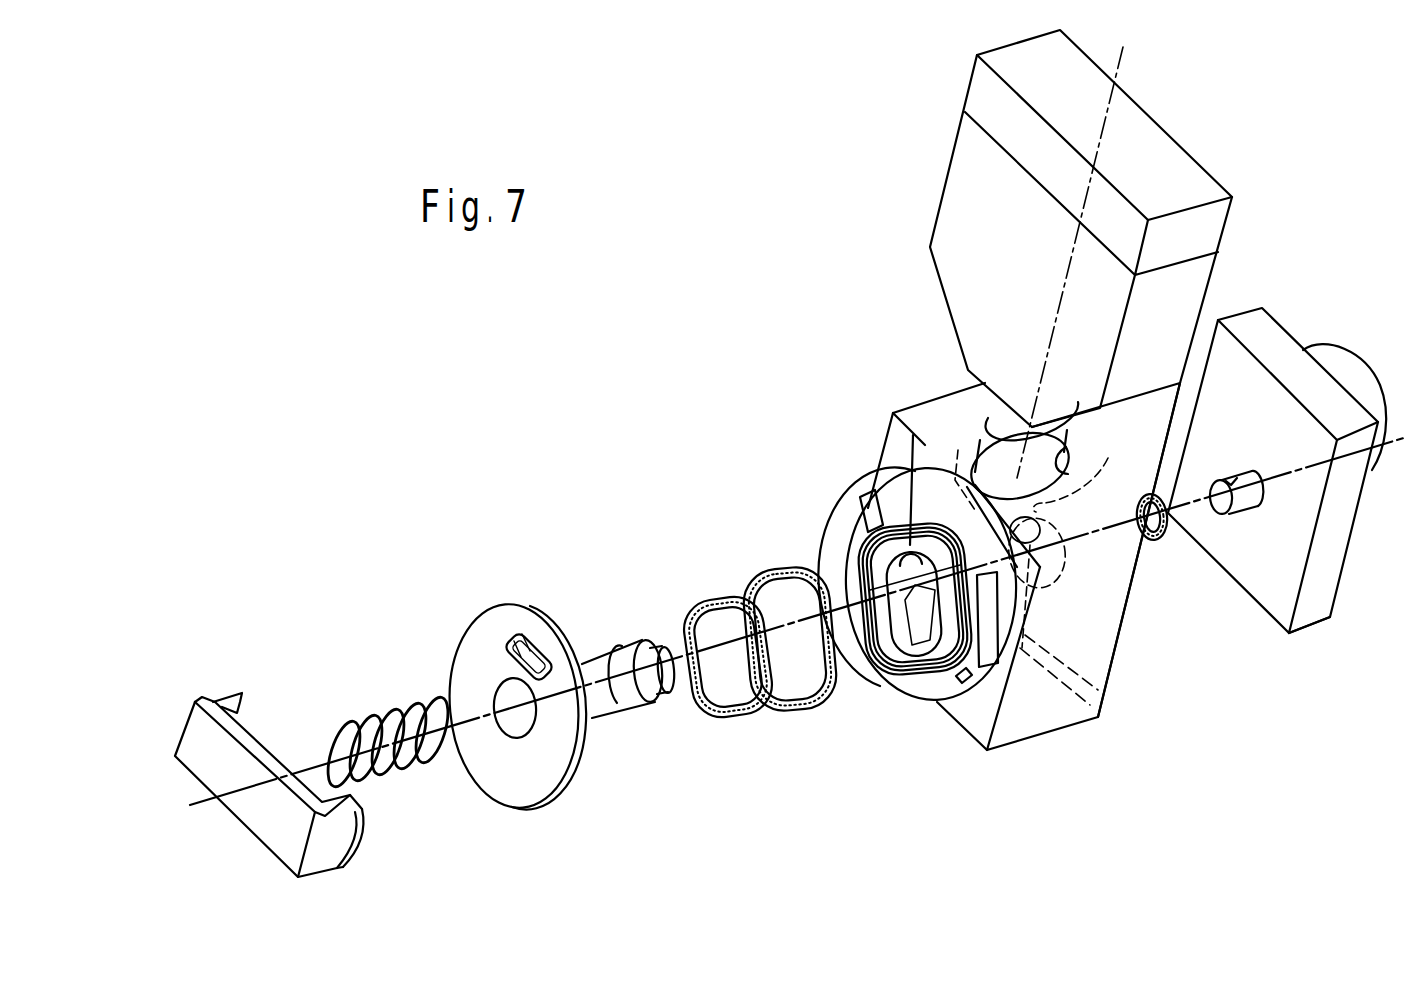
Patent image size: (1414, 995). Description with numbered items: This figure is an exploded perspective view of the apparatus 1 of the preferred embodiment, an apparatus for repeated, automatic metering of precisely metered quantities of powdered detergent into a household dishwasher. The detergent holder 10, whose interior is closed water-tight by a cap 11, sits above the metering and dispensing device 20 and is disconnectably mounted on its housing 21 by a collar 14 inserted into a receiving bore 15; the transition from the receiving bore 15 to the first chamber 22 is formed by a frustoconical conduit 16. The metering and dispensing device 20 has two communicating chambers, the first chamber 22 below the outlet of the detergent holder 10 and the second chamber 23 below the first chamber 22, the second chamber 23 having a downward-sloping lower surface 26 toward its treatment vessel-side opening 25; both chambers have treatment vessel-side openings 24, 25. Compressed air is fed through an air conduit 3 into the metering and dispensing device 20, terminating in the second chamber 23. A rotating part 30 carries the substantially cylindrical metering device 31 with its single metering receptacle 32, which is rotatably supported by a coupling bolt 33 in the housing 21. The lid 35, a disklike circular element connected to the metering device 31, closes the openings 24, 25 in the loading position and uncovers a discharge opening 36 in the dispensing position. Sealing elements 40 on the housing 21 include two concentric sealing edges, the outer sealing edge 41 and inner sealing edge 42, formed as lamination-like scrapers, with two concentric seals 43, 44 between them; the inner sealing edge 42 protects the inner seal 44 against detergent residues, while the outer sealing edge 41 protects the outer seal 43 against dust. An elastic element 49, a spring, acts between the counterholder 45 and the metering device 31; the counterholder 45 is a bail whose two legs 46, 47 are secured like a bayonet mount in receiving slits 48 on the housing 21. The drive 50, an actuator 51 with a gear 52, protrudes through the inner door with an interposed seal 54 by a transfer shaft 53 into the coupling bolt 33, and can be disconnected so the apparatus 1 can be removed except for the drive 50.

The apparatus 1 is at (718, 270).
The air conduit 3 is at (1110, 698).
The detergent holder 10 is at (1079, 254).
The cap 11 is at (1218, 222).
The collar 14 is at (993, 414).
The receiving bore 15 is at (1068, 448).
The frustoconical conduit 16 is at (1074, 500).
The metering and dispensing device 20 is at (831, 566).
The housing 21 is at (1104, 625).
The first chamber 22 is at (913, 455).
The second chamber 23 is at (906, 690).
The treatment vessel-side opening 24 is at (886, 560).
The treatment vessel-side opening 25 is at (928, 690).
The lower surface 26 is at (895, 678).
The rotating part 30 is at (563, 692).
The metering device 31 is at (612, 705).
The metering receptacle 32 is at (626, 642).
The coupling bolt 33 is at (660, 644).
The lid 35 is at (516, 775).
The discharge opening 36 is at (508, 633).
The sealing elements 40 is at (865, 614).
The outer sealing edge 41 is at (888, 642).
The inner sealing edge 42 is at (870, 600).
The outer seal 43 is at (776, 718).
The inner seal 44 is at (722, 720).
The counterholder 45 is at (294, 744).
The leg 46 is at (234, 690).
The leg 47 is at (364, 826).
The receiving slits 48 is at (836, 576).
The elastic element 49 is at (374, 712).
The drive 50 is at (1270, 457).
The actuator 51 is at (1348, 362).
The gear 52 is at (1319, 612).
The transfer shaft 53 is at (1252, 505).
The seal 54 is at (1166, 545).